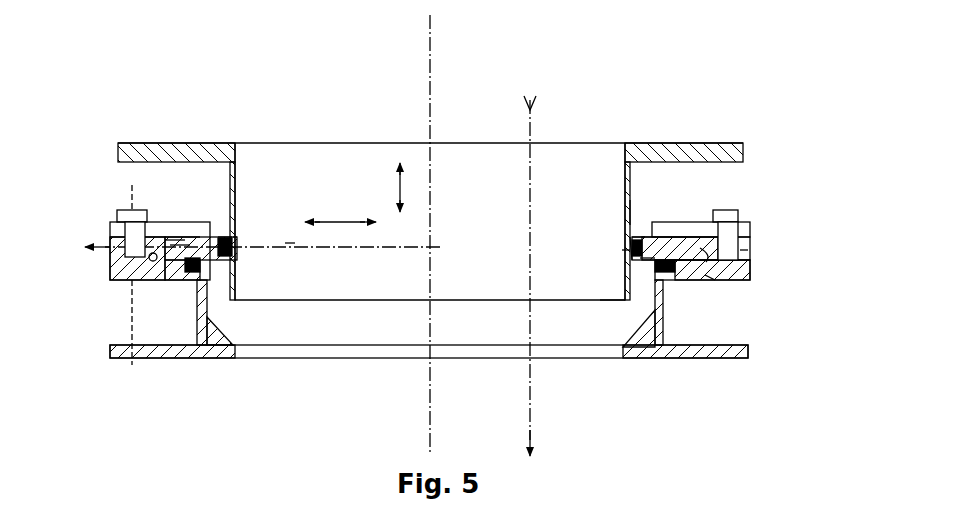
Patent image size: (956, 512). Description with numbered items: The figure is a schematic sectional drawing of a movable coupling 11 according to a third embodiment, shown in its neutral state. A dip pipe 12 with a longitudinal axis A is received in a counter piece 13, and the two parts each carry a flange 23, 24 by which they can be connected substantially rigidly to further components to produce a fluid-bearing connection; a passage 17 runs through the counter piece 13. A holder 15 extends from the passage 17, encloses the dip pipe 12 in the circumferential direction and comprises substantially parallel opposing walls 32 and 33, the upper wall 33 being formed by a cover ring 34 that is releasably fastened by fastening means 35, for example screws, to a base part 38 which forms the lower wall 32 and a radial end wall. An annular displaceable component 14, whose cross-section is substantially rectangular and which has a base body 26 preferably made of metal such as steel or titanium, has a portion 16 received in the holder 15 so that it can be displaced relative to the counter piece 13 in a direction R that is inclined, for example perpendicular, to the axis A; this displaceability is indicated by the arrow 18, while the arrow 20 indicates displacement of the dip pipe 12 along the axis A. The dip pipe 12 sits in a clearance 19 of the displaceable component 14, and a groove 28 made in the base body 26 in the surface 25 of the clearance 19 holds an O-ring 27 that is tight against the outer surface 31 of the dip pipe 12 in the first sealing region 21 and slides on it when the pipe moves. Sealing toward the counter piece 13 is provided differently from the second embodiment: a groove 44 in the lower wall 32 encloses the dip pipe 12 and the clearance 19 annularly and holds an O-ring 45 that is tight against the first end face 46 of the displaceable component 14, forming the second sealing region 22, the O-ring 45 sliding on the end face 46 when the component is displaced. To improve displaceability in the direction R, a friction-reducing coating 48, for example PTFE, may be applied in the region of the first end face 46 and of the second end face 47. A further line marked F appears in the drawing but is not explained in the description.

The movable coupling 11 is at (163, 105).
The dip pipe 12 is at (633, 185).
The counter piece 13 is at (748, 233).
The displaceable component 14 is at (632, 250).
The holder 15 is at (705, 255).
The portion 16 is at (208, 266).
The passage 17 is at (390, 338).
The arrow 18 is at (332, 222).
The clearance 19 is at (215, 262).
The arrow 20 is at (398, 183).
The first sealing region 21 is at (620, 253).
The second sealing region 22 is at (180, 266).
The flange 23 is at (712, 143).
The flange 24 is at (697, 357).
The surface 25 is at (242, 237).
The base body 26 is at (648, 258).
The O-ring 27 is at (630, 246).
The groove 28 is at (605, 298).
The outer surface 31 is at (636, 210).
The lower wall 32 is at (151, 261).
The upper wall 33 is at (747, 258).
The cover ring 34 is at (182, 230).
The fastening means 35 is at (183, 233).
The base part 38 is at (712, 283).
The groove 44 is at (675, 265).
The O-ring 45 is at (663, 267).
The first end face 46 is at (215, 265).
The second end face 47 is at (220, 232).
The friction-reducing coating 48 is at (190, 260).
The longitudinal axis A is at (482, 73).
The plane F is at (531, 130).
The direction R is at (290, 242).